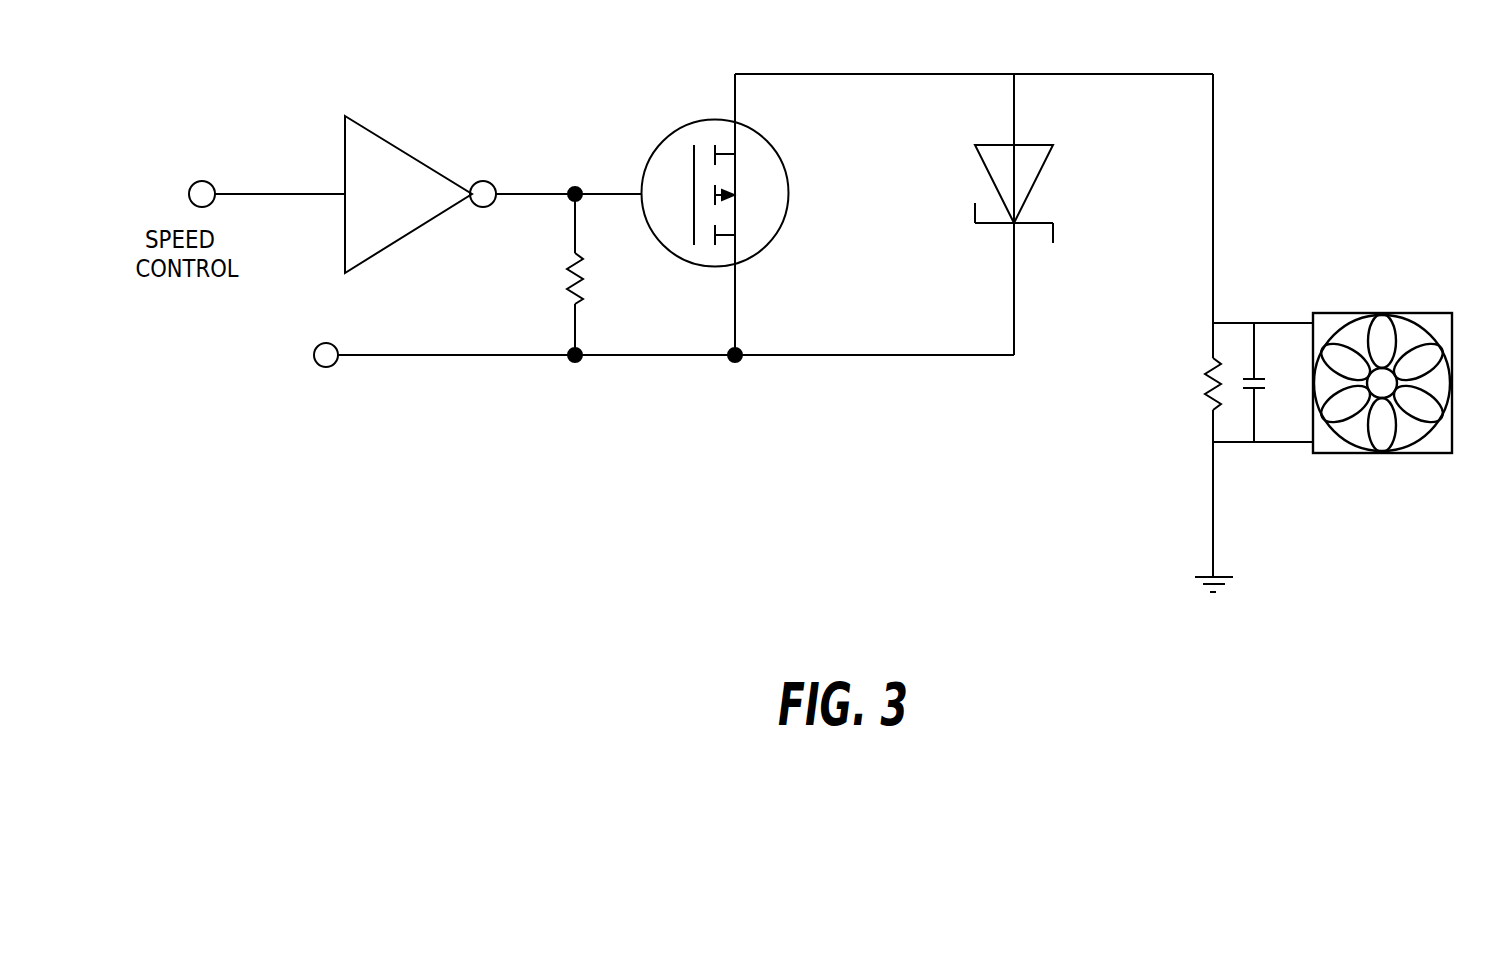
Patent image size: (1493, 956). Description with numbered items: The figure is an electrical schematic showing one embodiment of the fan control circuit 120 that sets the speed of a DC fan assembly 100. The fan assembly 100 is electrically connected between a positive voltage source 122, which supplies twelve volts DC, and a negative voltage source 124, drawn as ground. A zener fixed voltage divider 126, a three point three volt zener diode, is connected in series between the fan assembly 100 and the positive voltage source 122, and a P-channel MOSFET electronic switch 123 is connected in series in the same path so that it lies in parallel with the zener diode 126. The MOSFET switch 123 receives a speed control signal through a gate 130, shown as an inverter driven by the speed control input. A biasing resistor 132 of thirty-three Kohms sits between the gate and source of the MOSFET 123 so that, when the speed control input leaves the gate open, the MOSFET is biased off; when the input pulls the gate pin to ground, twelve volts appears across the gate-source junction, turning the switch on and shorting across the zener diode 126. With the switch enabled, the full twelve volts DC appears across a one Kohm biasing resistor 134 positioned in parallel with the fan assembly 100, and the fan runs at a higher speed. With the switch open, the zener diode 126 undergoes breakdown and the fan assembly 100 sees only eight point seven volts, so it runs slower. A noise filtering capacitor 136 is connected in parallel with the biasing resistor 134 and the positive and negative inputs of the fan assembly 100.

The fan assembly 100 is at (1416, 302).
The fan control circuit 120 is at (547, 510).
The positive voltage source 122 is at (282, 395).
The MOSFET transistor 123 is at (634, 136).
The negative voltage source 124 is at (1195, 595).
The zener fixed voltage divider 126 is at (965, 184).
The gate 130 is at (395, 145).
The biasing resistor 132 is at (600, 284).
The biasing resistor 134 is at (1203, 406).
The noise filtering capacitor 136 is at (1263, 396).